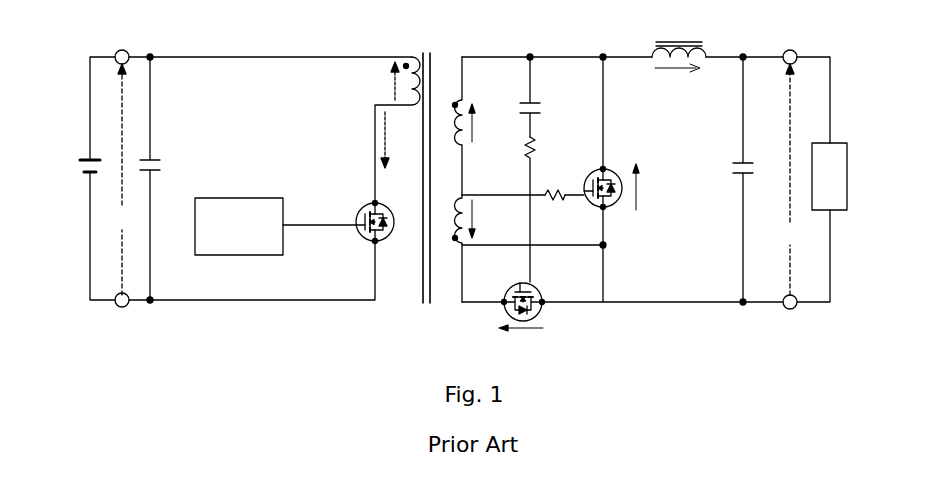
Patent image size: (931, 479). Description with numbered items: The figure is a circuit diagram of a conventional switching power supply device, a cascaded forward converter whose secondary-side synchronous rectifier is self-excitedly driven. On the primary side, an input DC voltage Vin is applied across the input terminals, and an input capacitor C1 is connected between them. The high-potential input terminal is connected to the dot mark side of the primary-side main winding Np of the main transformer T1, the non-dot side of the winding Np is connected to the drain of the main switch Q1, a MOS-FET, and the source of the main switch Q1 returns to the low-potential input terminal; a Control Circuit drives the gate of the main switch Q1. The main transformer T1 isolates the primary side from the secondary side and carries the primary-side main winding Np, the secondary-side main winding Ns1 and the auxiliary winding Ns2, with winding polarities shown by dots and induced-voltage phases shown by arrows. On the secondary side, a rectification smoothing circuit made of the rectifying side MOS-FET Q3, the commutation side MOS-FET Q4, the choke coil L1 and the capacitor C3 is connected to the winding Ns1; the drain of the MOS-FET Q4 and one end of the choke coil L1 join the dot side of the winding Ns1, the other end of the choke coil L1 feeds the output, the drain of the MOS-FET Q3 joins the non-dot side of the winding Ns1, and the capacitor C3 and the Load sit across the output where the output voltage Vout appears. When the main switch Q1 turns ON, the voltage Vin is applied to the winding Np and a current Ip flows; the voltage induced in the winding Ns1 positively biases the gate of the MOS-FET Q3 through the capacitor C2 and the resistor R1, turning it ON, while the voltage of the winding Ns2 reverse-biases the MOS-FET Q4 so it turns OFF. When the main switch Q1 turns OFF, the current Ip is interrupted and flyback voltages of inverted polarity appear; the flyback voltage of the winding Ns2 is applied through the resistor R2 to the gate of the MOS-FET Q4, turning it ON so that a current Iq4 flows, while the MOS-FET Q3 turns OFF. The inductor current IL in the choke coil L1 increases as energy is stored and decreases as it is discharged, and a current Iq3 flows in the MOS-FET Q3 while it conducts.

The input DC voltage Vin is at (92, 179).
The input capacitor C1 is at (158, 178).
The control circuit Control Circuit is at (275, 226).
The main switch Q1 is at (365, 219).
The primary-side main winding Np is at (391, 130).
The flowing current Ip is at (394, 140).
The main transformer T1 is at (427, 167).
The secondary-side main winding Ns1 is at (478, 126).
The auxiliary winding Ns2 is at (478, 248).
The capacitor C2 is at (539, 97).
The resistor R1 is at (542, 209).
The resistor R2 is at (555, 207).
The commutation side MOS-FET Q4 is at (606, 179).
The current in the commutation side MOS-FET Iq4 is at (650, 187).
The rectifying side MOS-FET Q3 is at (535, 303).
The current in the rectifying side MOS-FET Iq3 is at (521, 339).
The choke coil L1 is at (667, 46).
The inductor current IL is at (677, 78).
The capacitor C3 is at (752, 179).
The load Load is at (829, 176).
The output voltage Vout is at (790, 179).